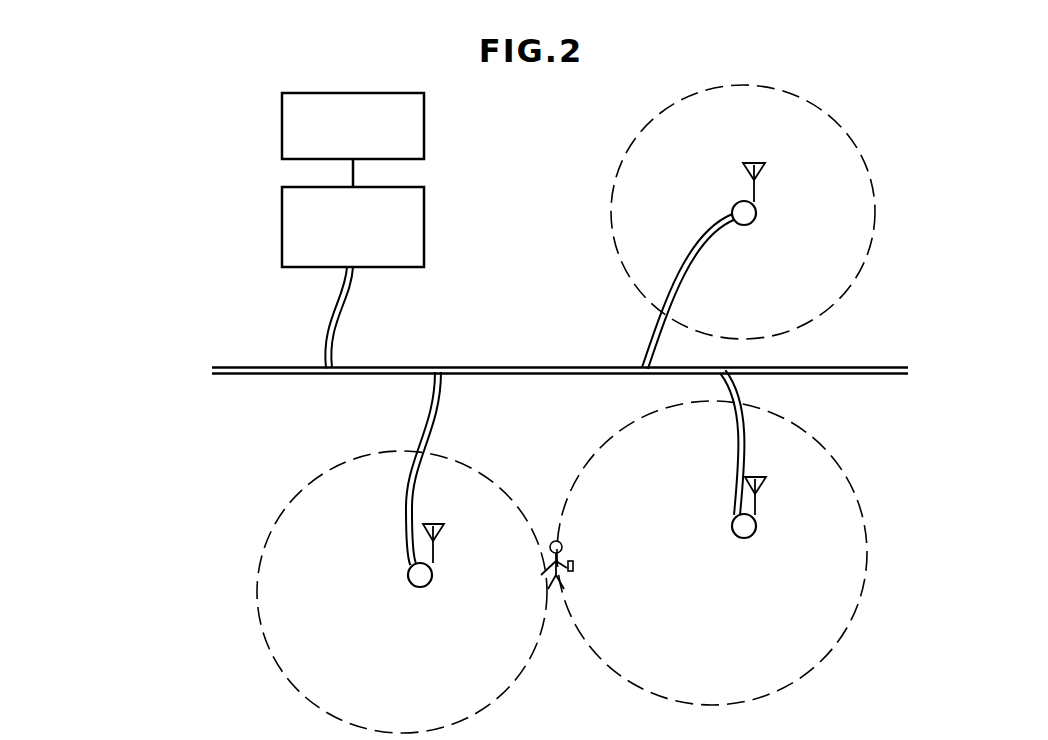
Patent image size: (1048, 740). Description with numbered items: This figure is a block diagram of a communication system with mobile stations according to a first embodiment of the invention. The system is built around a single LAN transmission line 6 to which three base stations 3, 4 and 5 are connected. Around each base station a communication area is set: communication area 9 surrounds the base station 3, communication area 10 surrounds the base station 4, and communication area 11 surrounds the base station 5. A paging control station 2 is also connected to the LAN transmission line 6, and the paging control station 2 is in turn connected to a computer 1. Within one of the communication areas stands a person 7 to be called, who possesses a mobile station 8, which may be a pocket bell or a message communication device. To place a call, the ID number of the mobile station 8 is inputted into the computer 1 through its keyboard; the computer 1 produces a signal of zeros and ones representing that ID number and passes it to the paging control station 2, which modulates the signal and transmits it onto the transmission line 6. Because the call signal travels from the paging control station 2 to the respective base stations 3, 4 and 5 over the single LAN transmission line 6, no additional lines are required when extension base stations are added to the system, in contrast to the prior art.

The computer 1 is at (425, 127).
The paging control station 2 is at (425, 216).
The base station 3 is at (771, 243).
The base station 4 is at (412, 622).
The base station 5 is at (747, 565).
The LAN transmission line 6 is at (838, 365).
The person 7 is at (572, 548).
The mobile station 8 is at (593, 571).
The communication area 9 is at (845, 151).
The communication area 10 is at (262, 576).
The communication area 11 is at (862, 578).